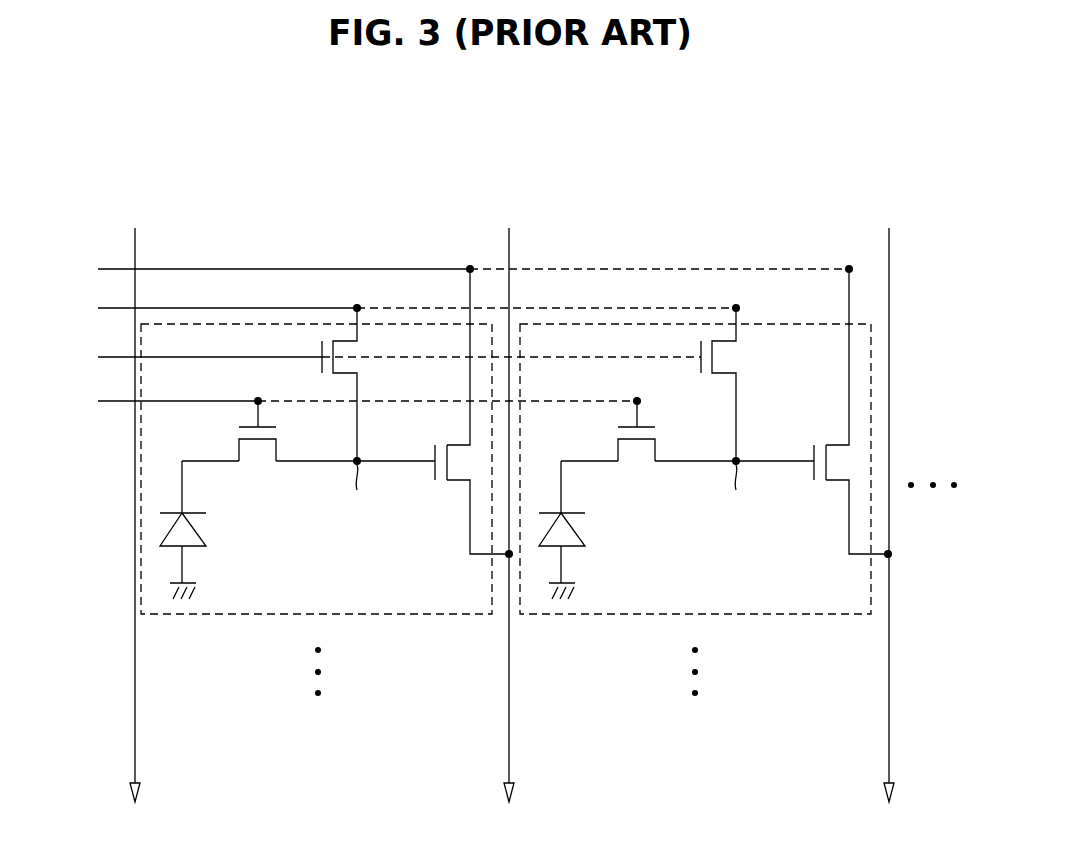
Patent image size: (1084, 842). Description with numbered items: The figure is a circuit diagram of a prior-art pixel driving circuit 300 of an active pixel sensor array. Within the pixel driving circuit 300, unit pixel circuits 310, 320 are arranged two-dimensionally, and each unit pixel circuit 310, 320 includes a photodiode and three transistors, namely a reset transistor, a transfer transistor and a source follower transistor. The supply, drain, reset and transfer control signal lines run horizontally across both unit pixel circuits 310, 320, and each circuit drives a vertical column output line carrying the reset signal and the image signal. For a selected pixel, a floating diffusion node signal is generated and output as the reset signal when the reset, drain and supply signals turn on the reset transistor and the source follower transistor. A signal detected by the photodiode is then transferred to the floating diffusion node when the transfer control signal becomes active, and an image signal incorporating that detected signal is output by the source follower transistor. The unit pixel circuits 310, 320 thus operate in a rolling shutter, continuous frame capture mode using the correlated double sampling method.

The pixel driving circuit 300 is at (833, 212).
The unit pixel circuit 310 is at (425, 614).
The unit pixel circuit 320 is at (805, 614).